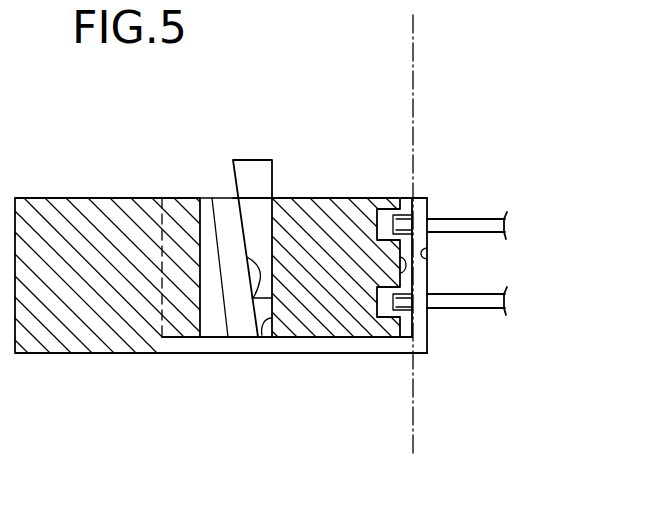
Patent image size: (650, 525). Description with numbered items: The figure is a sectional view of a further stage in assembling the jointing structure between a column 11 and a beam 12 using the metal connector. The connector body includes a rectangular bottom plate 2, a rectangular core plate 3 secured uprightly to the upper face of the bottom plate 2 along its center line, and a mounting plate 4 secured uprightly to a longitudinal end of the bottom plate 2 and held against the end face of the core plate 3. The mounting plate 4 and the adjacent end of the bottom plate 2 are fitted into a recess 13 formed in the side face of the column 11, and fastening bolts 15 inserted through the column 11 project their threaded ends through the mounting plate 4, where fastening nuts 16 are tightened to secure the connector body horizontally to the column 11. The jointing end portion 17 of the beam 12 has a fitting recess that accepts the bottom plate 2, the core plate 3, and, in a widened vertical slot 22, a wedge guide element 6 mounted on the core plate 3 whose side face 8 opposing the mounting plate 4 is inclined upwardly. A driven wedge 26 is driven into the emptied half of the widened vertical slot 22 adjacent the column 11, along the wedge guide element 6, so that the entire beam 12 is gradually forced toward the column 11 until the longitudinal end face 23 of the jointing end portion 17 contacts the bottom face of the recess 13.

The bottom plate 2 is at (338, 340).
The core plate 3 is at (210, 307).
The mounting plate 4 is at (430, 207).
The wedge guide element 6 is at (227, 198).
The side face 8 is at (252, 298).
The column 11 is at (413, 447).
The beam 12 is at (82, 226).
The recess 13 is at (428, 258).
The fastening bolt 15 is at (470, 307).
The fastening nut 16 is at (396, 206).
The jointing end portion 17 is at (298, 198).
The widened vertical slot 22 is at (268, 315).
The longitudinal end face 23 is at (398, 266).
The driven wedge 26 is at (257, 177).